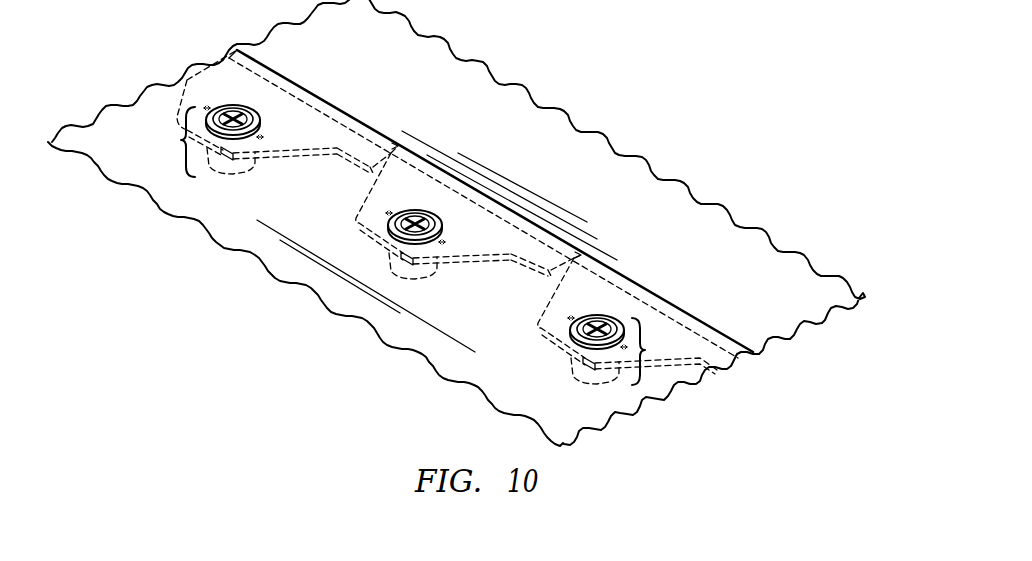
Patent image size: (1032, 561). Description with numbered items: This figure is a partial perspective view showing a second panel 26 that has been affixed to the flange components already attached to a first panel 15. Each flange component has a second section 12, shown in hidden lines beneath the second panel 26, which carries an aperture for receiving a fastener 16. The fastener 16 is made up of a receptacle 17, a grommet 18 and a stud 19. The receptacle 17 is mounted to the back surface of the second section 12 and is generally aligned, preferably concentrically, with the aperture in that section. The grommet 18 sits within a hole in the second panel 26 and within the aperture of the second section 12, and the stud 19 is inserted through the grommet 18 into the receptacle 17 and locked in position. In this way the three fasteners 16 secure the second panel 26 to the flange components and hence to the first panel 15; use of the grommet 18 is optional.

The second section 12 is at (477, 247).
The first panel 15 is at (420, 85).
The fastener 16 is at (181, 140).
The receptacle 17 is at (227, 176).
The grommet 18 is at (411, 211).
The stud 19 is at (405, 225).
The second panel 26 is at (533, 377).